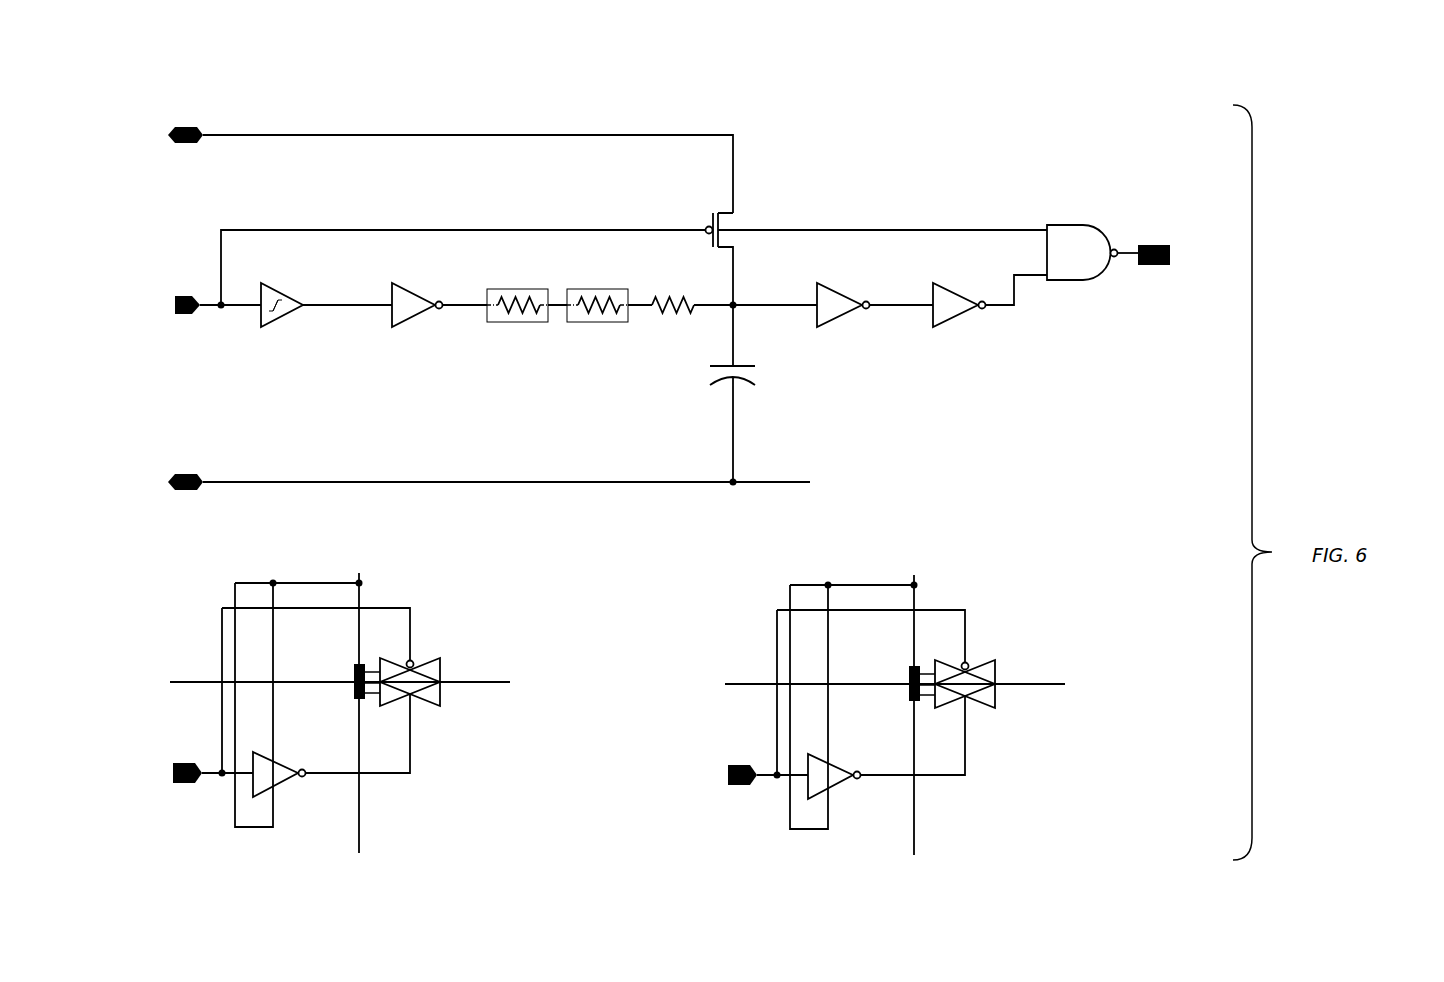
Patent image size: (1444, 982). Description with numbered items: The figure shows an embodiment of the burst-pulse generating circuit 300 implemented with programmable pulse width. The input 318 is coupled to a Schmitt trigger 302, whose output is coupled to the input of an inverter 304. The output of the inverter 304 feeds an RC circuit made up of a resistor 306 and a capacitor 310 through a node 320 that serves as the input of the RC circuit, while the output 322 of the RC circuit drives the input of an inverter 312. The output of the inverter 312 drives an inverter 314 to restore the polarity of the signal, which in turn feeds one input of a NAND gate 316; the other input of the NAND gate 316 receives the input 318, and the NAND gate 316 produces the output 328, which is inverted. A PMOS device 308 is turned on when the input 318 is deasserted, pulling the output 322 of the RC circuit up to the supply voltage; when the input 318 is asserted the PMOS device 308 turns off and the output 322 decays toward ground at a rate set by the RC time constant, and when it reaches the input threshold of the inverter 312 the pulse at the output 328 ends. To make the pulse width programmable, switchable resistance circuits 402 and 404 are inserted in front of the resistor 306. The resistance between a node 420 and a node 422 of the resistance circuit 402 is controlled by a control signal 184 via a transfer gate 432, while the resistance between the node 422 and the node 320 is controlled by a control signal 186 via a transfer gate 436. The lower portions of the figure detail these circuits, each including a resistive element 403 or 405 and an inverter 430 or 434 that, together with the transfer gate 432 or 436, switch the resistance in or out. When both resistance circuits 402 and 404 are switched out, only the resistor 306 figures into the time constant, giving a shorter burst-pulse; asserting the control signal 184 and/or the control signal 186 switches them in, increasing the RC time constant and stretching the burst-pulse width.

The burst-pulse generating circuit 300 is at (233, 95).
The input 318 is at (168, 305).
The Schmitt trigger 302 is at (288, 316).
The inverter 304 is at (422, 313).
The switchable resistance circuit 402 is at (522, 288).
The switchable resistance circuit 404 is at (600, 288).
The resistor 306 is at (665, 291).
The PMOS device 308 is at (725, 213).
The capacitor 310 is at (742, 378).
The inverter 312 is at (844, 318).
The inverter 314 is at (960, 318).
The NAND gate 316 is at (1093, 280).
The input of the RC circuit 320 is at (641, 303).
The output of the RC circuit 322 is at (734, 304).
The output of NAND gate 328 is at (1182, 259).
The node 420 is at (471, 307).
The node 422 is at (559, 307).
The resistor 403 is at (353, 668).
The resistor 405 is at (894, 670).
The inverter 430 is at (285, 783).
The transfer gate 432 is at (425, 703).
The inverter 434 is at (853, 786).
The transfer gate 436 is at (985, 700).
The control signal 184 is at (192, 774).
The control signal 186 is at (747, 776).